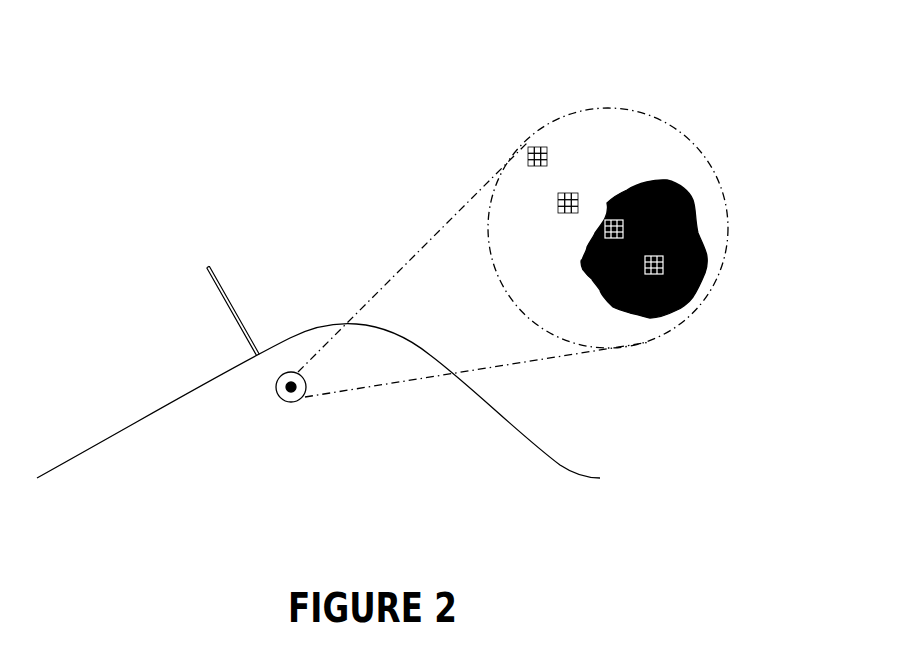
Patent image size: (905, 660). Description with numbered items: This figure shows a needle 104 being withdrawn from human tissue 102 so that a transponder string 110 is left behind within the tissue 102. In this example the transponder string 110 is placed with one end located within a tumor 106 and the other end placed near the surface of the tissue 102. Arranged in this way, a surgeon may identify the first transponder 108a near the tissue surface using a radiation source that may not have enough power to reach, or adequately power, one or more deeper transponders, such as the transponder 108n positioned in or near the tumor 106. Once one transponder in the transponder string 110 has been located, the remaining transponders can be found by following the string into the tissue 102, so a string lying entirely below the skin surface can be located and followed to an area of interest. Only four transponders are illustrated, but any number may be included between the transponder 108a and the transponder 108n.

The tissue 102 is at (372, 445).
The needle 104 is at (213, 295).
The tumor 106 is at (697, 222).
The first transponder 108a is at (528, 152).
The transponder 108n is at (663, 267).
The transponder string 110 is at (578, 185).